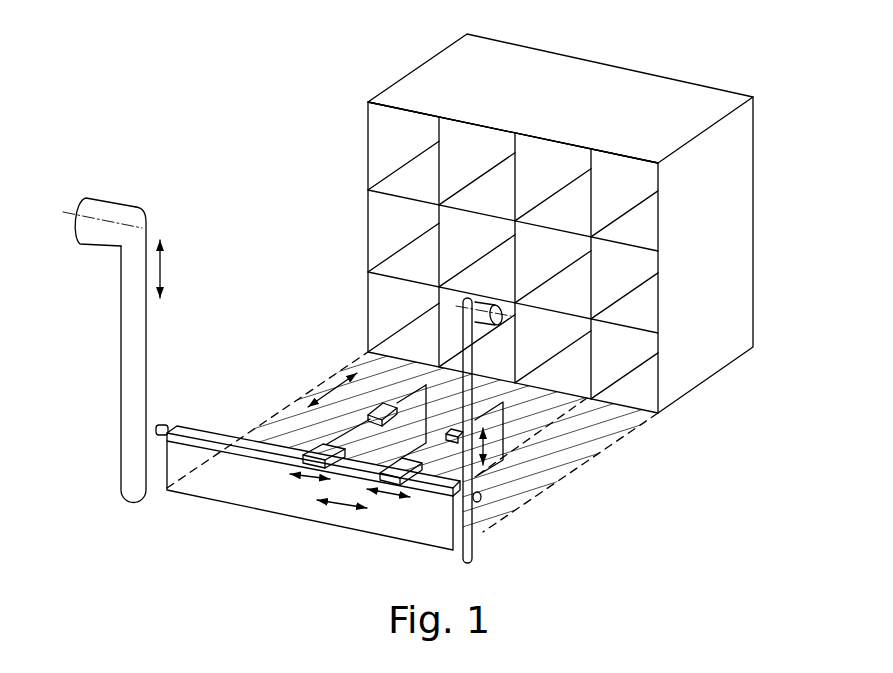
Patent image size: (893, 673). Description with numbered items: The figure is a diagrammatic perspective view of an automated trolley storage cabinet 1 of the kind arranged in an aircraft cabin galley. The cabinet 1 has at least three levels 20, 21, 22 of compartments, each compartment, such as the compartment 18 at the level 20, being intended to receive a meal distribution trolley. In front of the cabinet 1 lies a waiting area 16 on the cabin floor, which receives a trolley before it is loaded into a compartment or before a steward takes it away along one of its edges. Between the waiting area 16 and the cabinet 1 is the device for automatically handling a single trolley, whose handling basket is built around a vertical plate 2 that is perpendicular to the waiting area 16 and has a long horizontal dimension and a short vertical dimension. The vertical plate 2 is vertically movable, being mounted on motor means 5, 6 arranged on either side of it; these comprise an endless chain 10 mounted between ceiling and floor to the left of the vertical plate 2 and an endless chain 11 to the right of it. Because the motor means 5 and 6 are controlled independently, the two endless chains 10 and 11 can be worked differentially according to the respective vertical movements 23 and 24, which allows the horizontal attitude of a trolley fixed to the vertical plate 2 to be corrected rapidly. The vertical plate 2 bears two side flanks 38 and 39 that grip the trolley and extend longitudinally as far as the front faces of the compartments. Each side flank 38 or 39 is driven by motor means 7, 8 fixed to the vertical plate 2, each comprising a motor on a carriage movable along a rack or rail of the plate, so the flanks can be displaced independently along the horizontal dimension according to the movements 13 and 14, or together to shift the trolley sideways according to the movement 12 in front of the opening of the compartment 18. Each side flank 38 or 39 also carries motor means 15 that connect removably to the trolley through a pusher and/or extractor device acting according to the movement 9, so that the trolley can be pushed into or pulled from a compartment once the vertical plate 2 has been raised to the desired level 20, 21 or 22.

The automated trolley storage cabinet 1 is at (606, 73).
The vertical plate 2 is at (230, 485).
The motor means 5 is at (107, 201).
The motor means 6 is at (486, 300).
The motor means 7 is at (313, 450).
The motor means 8 is at (404, 487).
The movement 9 is at (322, 378).
The endless chain 10 is at (124, 320).
The endless chain 11 is at (473, 556).
The movement 12 is at (340, 509).
The movement 13 is at (305, 482).
The movement 14 is at (393, 500).
The motor means 15 is at (383, 403).
The waiting area 16 is at (584, 450).
The compartment 18 is at (650, 388).
The level 20 is at (670, 365).
The level 21 is at (670, 297).
The level 22 is at (670, 209).
The vertical movement 23 is at (502, 450).
The vertical movement 24 is at (164, 272).
The side flank 38 is at (431, 449).
The side flank 39 is at (498, 432).